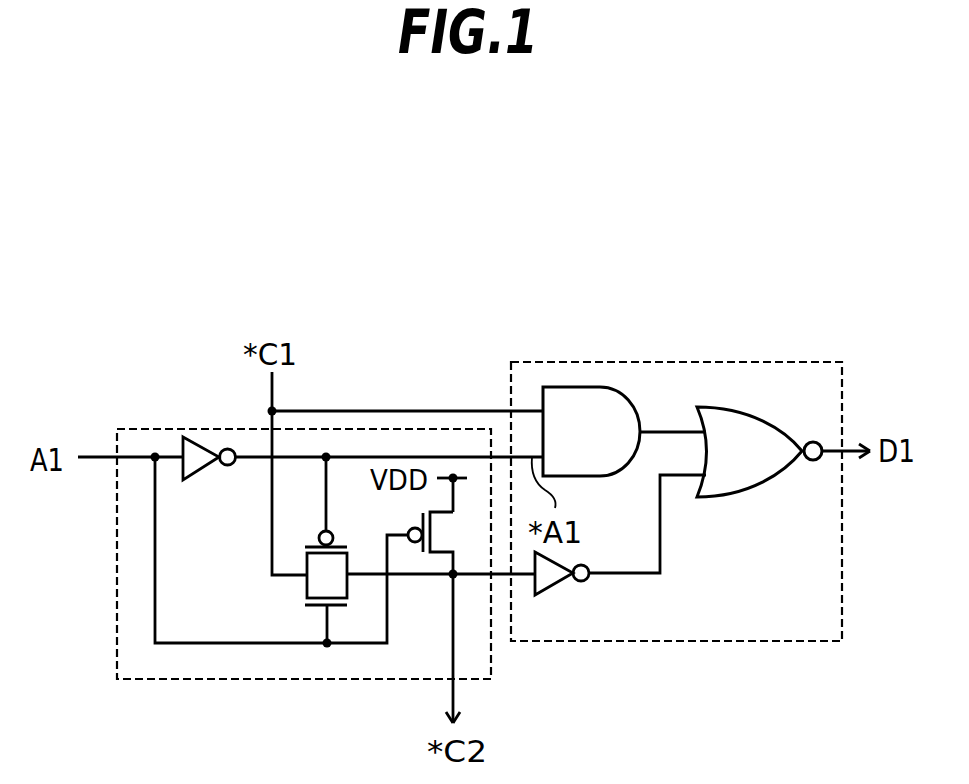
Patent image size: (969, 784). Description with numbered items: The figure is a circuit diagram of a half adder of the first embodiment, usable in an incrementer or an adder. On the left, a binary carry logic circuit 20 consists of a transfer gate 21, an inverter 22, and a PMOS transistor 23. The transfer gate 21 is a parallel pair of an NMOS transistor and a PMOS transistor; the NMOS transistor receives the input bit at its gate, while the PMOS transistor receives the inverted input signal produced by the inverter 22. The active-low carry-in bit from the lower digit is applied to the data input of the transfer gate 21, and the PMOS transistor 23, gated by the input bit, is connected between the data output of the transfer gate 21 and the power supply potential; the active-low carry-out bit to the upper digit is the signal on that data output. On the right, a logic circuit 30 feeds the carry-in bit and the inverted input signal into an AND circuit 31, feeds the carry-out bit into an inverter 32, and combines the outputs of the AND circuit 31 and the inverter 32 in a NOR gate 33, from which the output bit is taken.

The binary carry logic circuit 20 is at (118, 612).
The transfer gate 21 is at (305, 588).
The inverter 22 is at (203, 474).
The PMOS transistor 23 is at (442, 512).
The logic circuit 30 is at (690, 361).
The AND circuit 31 is at (623, 465).
The inverter 32 is at (558, 583).
The NOR gate 33 is at (773, 483).